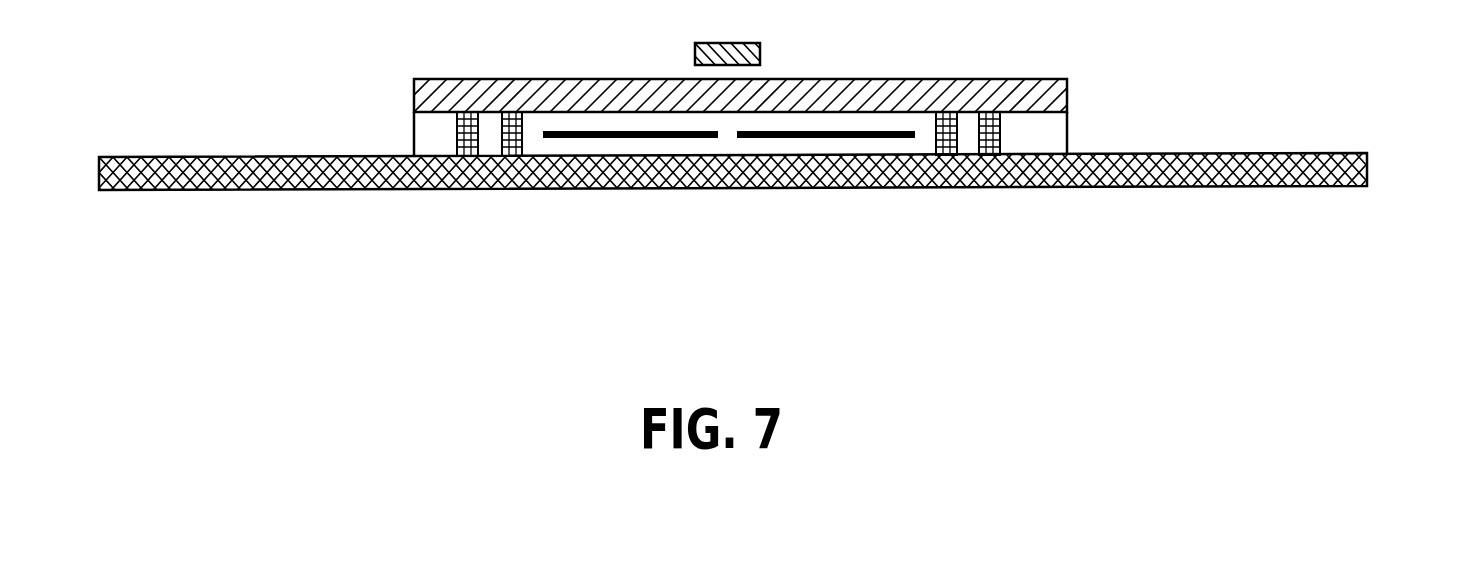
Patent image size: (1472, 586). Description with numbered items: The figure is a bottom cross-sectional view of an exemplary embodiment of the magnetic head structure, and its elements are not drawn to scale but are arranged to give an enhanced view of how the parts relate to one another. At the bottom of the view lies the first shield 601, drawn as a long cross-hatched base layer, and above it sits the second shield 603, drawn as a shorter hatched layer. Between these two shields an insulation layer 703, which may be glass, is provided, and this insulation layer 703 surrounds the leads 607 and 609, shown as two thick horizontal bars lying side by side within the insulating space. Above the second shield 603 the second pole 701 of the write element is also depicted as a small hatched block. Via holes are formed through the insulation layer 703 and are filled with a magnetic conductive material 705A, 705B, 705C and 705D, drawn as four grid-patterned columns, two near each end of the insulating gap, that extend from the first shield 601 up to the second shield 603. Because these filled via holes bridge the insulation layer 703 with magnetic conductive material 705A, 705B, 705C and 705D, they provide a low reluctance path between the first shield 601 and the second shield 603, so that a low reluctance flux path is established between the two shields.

The first shield 601 is at (1367, 167).
The second shield 603 is at (1067, 95).
The lead 607 is at (620, 130).
The lead 609 is at (877, 130).
The second pole 701 is at (758, 50).
The insulation layer 703 is at (1053, 133).
The magnetic conductive material 705A is at (466, 150).
The magnetic conductive material 705B is at (510, 150).
The magnetic conductive material 705C is at (946, 150).
The magnetic conductive material 705D is at (991, 150).